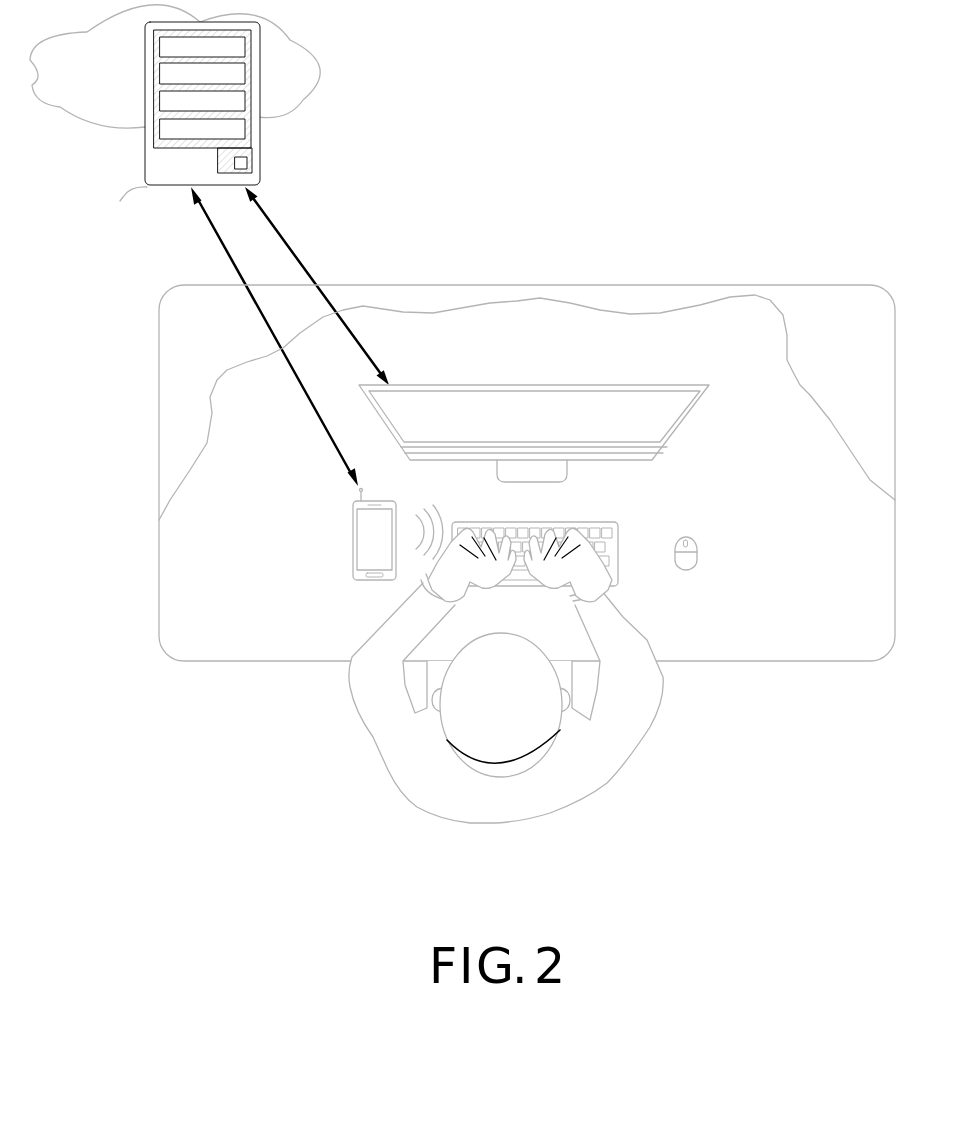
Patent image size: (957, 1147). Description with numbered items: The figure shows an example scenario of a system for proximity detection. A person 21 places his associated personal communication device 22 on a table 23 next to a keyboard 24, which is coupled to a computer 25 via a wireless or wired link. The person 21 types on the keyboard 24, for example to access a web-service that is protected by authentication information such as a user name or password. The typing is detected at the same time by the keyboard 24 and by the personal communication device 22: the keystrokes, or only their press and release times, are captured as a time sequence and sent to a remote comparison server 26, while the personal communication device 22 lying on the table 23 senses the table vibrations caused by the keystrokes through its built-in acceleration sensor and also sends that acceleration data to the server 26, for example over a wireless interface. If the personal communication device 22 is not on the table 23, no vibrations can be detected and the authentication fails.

The person 21 is at (397, 760).
The personal communication device 22 is at (353, 536).
The table 23 is at (800, 390).
The keyboard 24 is at (620, 565).
The computer 25 is at (649, 386).
The remote server 26 is at (175, 121).